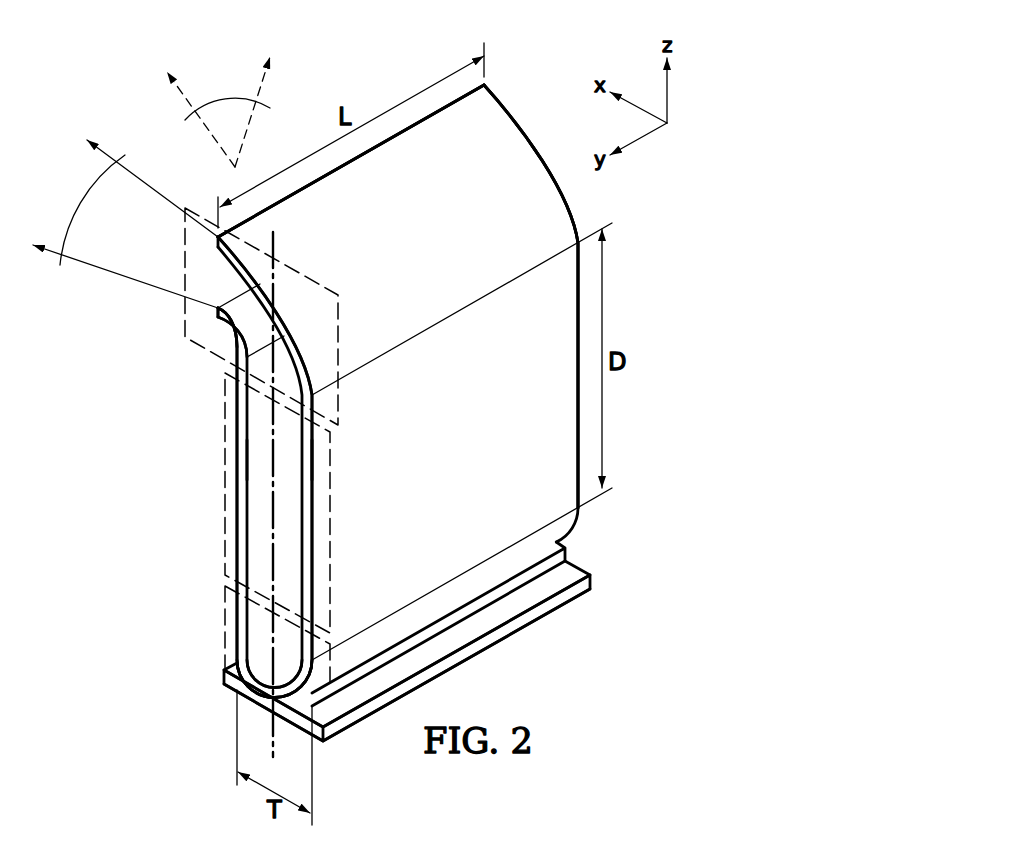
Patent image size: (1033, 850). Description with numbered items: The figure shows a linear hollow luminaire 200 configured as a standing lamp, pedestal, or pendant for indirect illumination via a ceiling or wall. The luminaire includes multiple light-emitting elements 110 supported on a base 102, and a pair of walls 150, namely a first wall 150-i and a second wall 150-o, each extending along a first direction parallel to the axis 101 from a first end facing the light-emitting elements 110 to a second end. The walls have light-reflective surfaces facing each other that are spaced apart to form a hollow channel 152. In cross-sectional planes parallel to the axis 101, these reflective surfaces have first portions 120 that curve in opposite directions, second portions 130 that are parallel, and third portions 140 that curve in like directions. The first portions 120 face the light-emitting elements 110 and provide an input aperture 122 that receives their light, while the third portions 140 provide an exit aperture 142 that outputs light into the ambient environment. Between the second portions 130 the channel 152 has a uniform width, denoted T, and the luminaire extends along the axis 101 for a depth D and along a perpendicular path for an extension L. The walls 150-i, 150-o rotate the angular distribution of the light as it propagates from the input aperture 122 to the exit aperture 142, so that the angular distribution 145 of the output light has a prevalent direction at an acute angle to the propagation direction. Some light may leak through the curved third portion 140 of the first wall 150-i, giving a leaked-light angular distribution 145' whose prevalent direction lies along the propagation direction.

The hollow luminaire 200 is at (117, 82).
The axis 101 is at (270, 741).
The base 102 is at (347, 732).
The light-emitting elements 110 is at (290, 663).
The first portions 120 is at (223, 620).
The input aperture 122 is at (283, 685).
The second portions 130 is at (223, 484).
The third portions 140 is at (310, 271).
The exit aperture 142 is at (228, 283).
The angular distribution of output light 145 is at (125, 245).
The angular distribution of leaked light 145' is at (259, 106).
The walls 150 is at (432, 472).
The first wall 150-i is at (312, 461).
The second wall 150-o is at (248, 462).
The hollow channel 152 is at (263, 502).